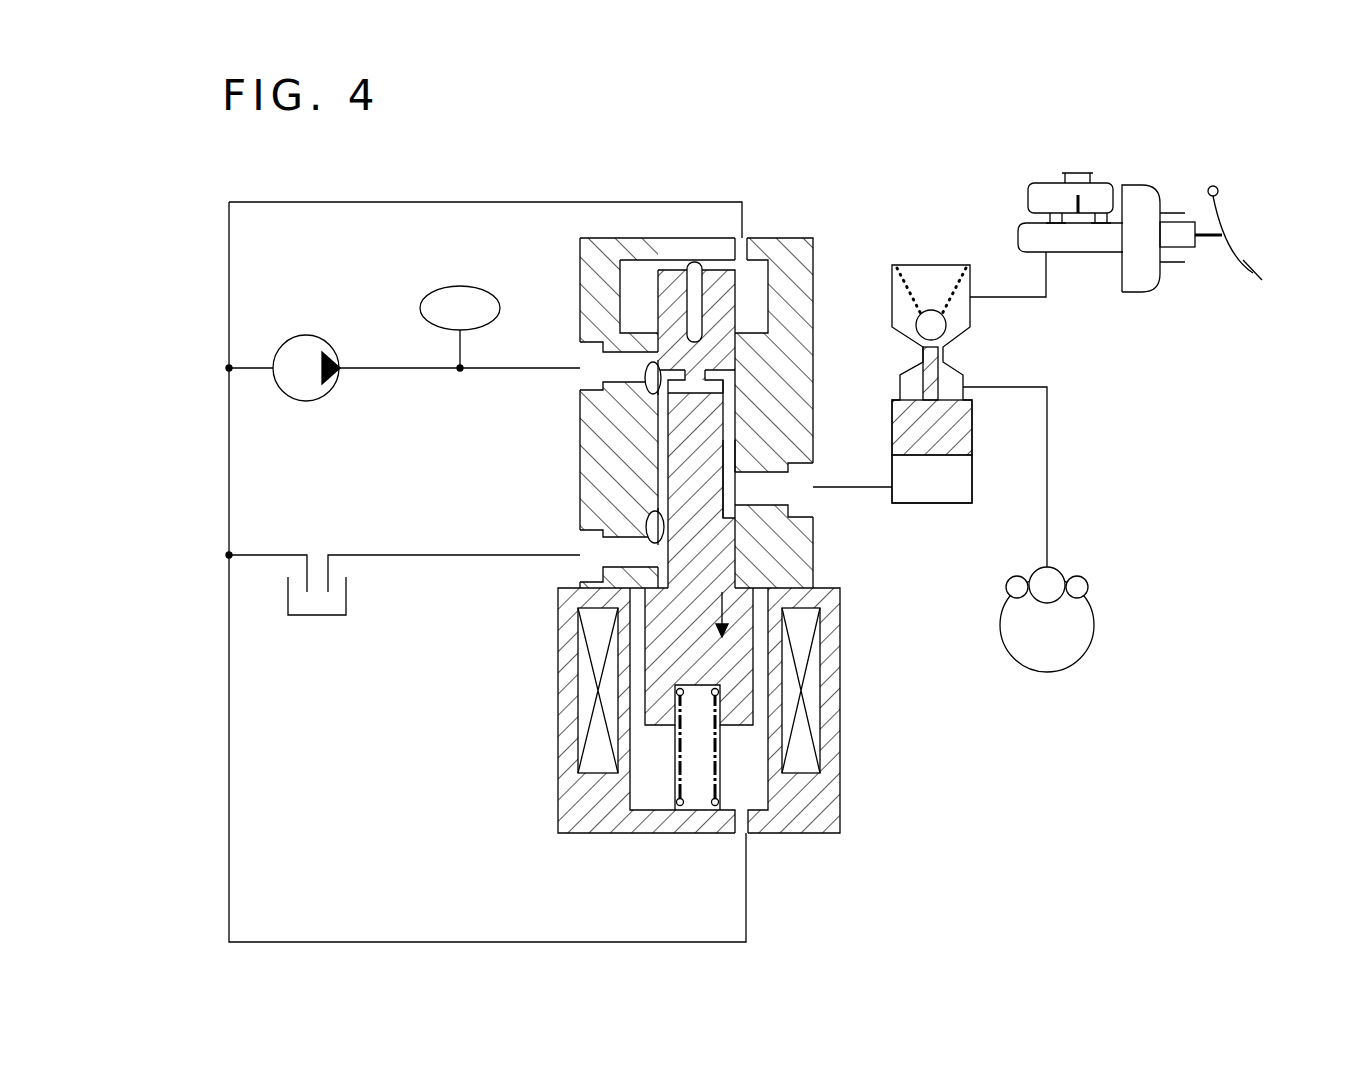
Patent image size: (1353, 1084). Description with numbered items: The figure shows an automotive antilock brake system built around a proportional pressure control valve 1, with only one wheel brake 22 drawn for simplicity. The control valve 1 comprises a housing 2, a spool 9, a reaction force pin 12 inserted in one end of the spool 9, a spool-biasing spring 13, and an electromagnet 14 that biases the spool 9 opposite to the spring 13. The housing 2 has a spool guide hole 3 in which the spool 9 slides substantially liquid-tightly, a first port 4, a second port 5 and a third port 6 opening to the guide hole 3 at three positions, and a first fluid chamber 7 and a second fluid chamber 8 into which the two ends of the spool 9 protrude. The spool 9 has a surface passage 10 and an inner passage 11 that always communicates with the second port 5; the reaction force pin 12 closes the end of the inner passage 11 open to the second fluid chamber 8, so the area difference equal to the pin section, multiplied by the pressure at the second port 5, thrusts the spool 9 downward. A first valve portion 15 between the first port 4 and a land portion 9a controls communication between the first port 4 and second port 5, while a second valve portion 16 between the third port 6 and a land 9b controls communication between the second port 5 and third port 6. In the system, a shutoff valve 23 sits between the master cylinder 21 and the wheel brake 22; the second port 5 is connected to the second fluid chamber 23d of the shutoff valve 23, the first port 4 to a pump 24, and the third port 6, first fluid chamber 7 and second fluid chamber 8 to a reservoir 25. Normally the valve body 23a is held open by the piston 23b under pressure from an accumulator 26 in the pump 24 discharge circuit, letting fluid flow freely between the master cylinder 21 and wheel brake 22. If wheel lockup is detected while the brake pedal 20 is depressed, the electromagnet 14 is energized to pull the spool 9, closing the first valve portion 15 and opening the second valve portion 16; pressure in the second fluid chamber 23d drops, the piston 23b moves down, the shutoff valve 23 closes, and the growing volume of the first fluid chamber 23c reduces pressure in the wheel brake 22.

The proportional pressure control valve 1 is at (806, 234).
The housing 2 is at (793, 268).
The spool guide hole 3 is at (735, 385).
The first port 4 is at (587, 355).
The second port 5 is at (810, 493).
The third port 6 is at (590, 560).
The first fluid chamber 7 is at (745, 785).
The second fluid chamber 8 is at (755, 285).
The spool 9 is at (726, 430).
The land portion 9a is at (642, 380).
The land 9b is at (645, 527).
The surface passage 10 is at (725, 458).
The inner passage 11 is at (692, 338).
The reaction force pin 12 is at (690, 280).
The spool-biasing spring 13 is at (673, 805).
The electromagnet 14 is at (557, 722).
The first valve portion 15 is at (660, 380).
The second valve portion 16 is at (650, 520).
The brake pedal 20 is at (1265, 262).
The master cylinder 21 is at (1028, 237).
The wheel brake 22 is at (1050, 580).
The shutoff valve 23 is at (975, 327).
The valve body 23a is at (930, 318).
The piston 23b is at (945, 437).
The first fluid chamber 23c is at (950, 378).
The second fluid chamber 23d is at (945, 490).
The pump 24 is at (305, 335).
The reservoir 25 is at (322, 617).
The accumulator 26 is at (457, 285).